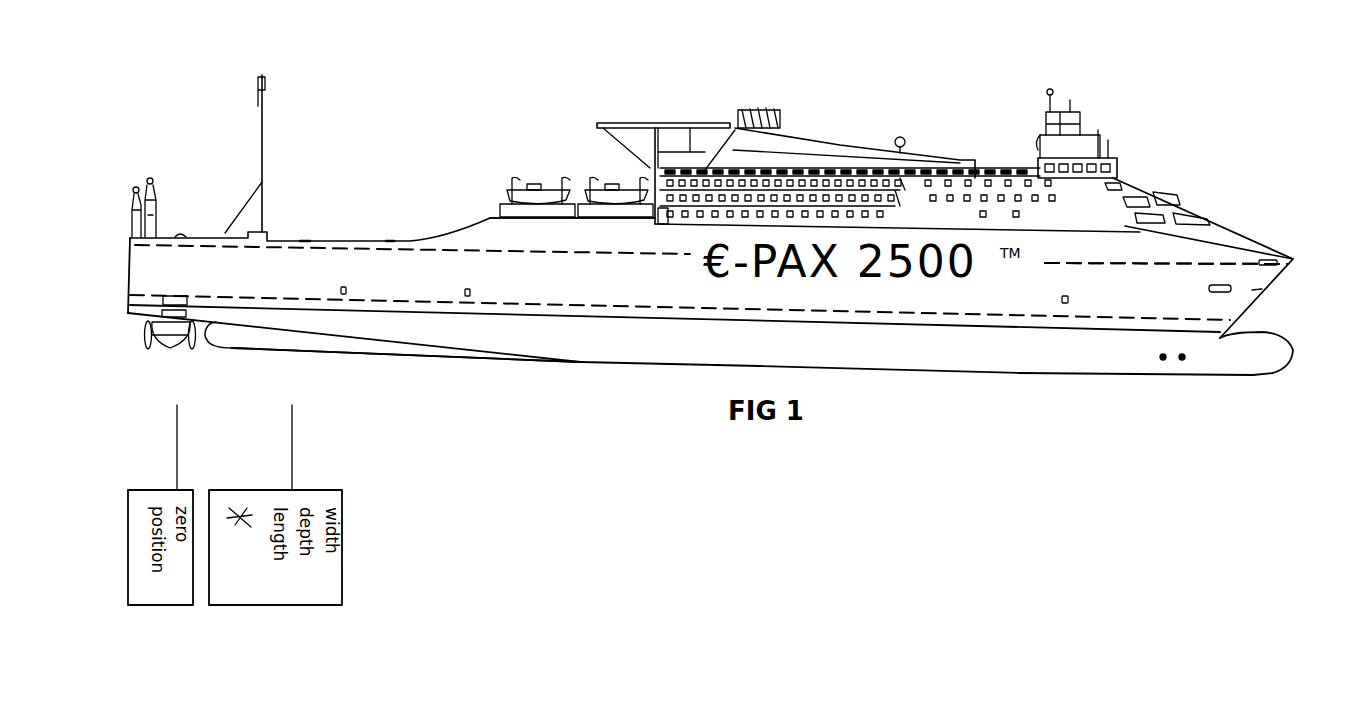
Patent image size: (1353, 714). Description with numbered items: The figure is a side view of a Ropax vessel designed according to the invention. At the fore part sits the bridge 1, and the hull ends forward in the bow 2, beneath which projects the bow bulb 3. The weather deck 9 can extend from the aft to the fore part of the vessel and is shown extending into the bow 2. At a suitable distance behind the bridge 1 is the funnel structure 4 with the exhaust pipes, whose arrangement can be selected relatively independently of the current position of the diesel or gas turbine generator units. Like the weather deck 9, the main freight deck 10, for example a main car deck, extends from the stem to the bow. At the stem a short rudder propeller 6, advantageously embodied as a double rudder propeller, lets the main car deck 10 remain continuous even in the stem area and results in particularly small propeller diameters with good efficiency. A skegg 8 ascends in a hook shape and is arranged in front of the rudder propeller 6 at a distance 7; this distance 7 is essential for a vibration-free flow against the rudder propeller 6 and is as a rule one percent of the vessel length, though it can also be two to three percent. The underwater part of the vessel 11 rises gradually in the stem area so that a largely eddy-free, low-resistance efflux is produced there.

The bridge 1 is at (1093, 160).
The bow 2 is at (1267, 287).
The bow bulb 3 is at (1253, 353).
The funnel structure 4 is at (773, 140).
The rudder propeller 6 is at (177, 348).
The distance 7 is at (202, 350).
The skegg 8 is at (278, 345).
The weather deck 9 is at (1183, 263).
The main freight deck 10 is at (1018, 318).
The underwater part of the vessel 11 is at (373, 343).